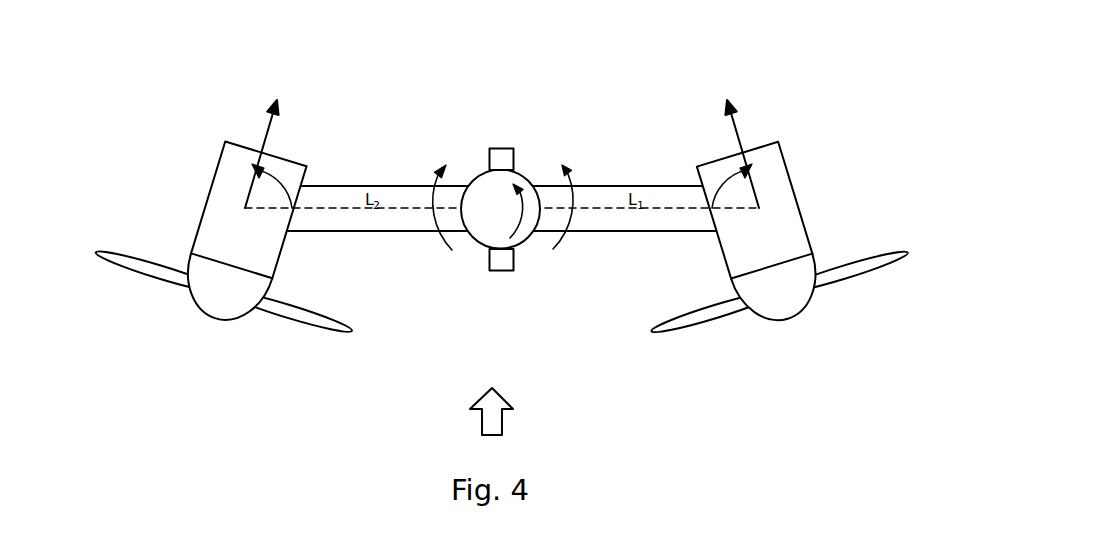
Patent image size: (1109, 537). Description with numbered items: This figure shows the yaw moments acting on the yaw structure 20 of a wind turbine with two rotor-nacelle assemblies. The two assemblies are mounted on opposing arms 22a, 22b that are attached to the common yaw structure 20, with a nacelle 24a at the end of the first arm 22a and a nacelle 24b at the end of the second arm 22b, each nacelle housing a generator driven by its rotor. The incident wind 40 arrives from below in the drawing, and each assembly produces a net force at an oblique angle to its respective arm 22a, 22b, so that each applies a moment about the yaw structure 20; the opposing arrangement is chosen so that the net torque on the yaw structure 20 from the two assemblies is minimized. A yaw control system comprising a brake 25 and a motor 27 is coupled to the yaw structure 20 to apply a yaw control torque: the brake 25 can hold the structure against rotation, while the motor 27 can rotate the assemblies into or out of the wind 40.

The yaw structure 20 is at (523, 248).
The first arm 22a is at (667, 190).
The second arm 22b is at (353, 233).
The nacelle 24a is at (770, 155).
The nacelle 24b is at (284, 167).
The brake 25 is at (497, 148).
The motor 27 is at (502, 271).
The wind 40 is at (490, 413).